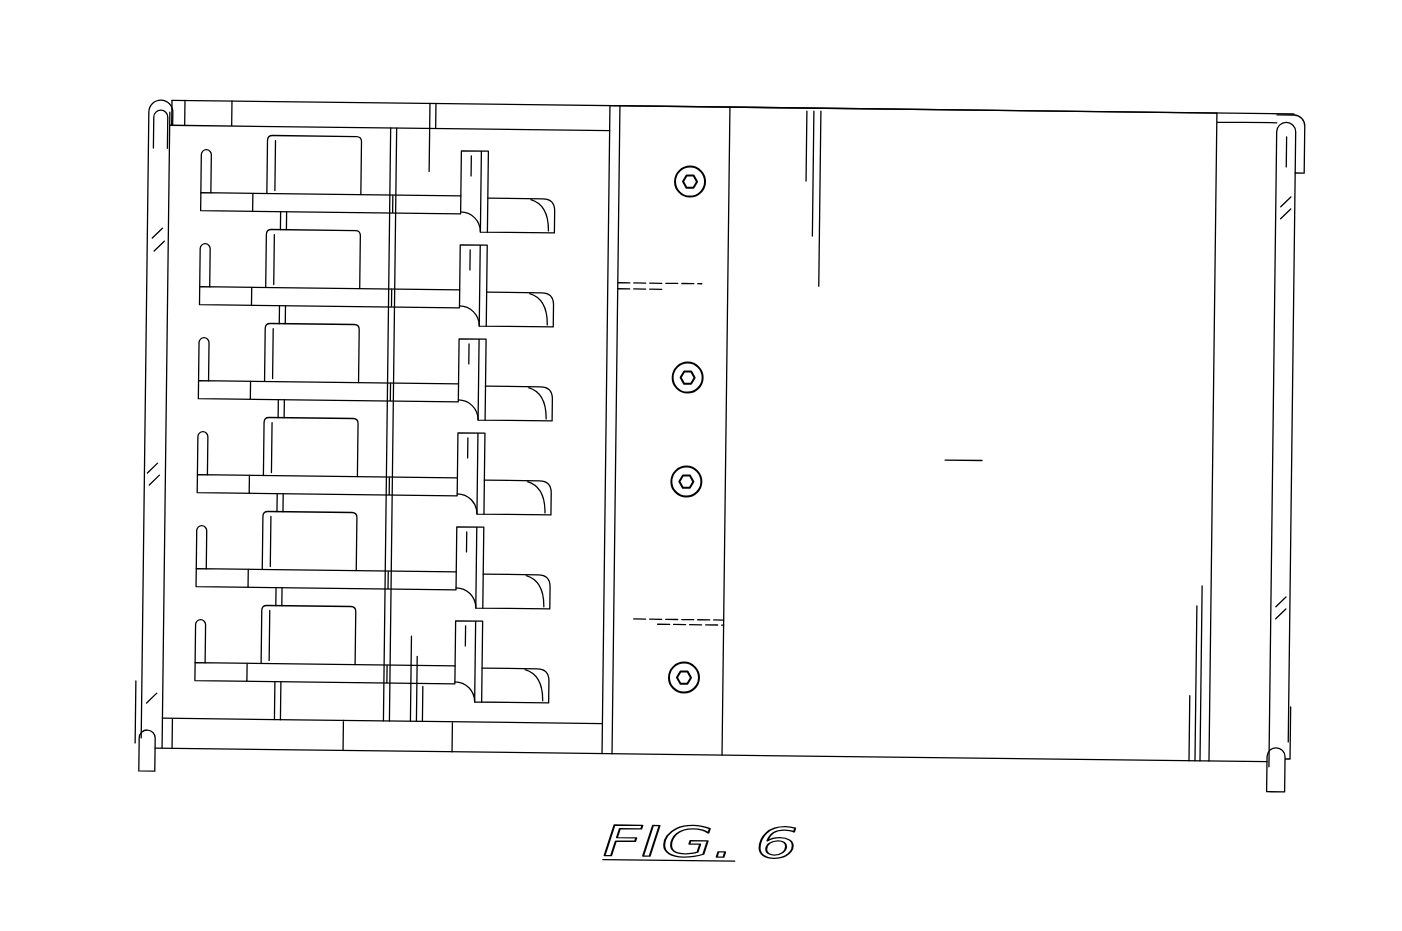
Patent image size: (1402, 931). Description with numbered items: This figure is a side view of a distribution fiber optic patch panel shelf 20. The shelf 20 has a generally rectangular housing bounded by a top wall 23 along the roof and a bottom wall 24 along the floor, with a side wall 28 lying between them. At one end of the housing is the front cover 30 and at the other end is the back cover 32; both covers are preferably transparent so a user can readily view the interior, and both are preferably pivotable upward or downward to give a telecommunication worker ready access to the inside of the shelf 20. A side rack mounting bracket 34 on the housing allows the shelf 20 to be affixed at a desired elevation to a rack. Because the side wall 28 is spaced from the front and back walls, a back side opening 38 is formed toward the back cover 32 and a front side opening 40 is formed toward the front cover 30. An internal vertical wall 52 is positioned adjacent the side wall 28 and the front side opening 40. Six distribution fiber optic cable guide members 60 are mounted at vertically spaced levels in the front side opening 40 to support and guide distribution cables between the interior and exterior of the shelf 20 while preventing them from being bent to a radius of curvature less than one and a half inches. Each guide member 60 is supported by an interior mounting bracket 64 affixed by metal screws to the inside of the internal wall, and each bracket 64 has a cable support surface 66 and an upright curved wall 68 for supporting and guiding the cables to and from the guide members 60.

The distribution fiber optic patch panel shelf 20 is at (979, 107).
The top wall 23 is at (771, 103).
The bottom wall 24 is at (992, 757).
The side wall 28 is at (1003, 436).
The front cover 30 is at (154, 480).
The back cover 32 is at (1281, 264).
The side rack mounting bracket 34 is at (670, 571).
The back side opening 38 is at (1241, 487).
The front side opening 40 is at (373, 164).
The internal vertical wall 52 is at (280, 708).
The distribution fiber optic cable guide member 60 is at (216, 393).
The interior mounting bracket 64 is at (502, 313).
The cable support surface 66 is at (406, 396).
The upright curved wall 68 is at (483, 455).